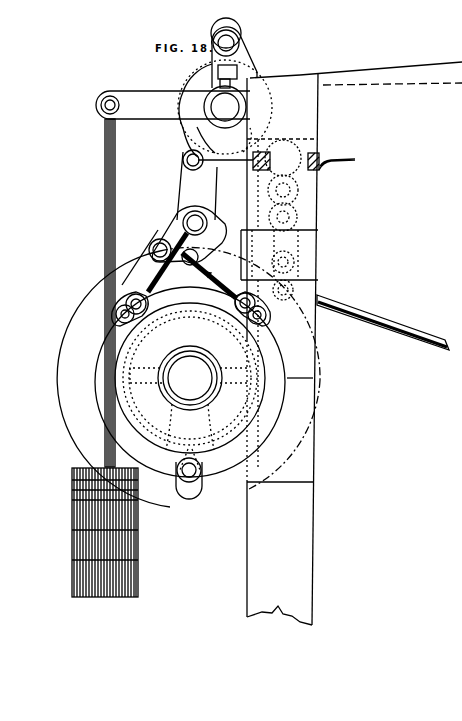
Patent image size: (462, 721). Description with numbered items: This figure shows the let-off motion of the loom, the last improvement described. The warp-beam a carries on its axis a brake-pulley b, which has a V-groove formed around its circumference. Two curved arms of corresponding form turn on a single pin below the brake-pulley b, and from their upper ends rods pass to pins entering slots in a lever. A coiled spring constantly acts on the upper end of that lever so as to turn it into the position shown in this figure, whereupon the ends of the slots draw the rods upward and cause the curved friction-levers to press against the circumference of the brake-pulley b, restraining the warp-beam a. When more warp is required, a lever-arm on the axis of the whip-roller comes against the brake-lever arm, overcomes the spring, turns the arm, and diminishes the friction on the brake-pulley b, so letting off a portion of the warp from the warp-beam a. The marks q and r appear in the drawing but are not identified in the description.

The warp-beam a is at (191, 377).
The brake-pulley b is at (188, 420).
The lever arm q is at (210, 167).
The bar r is at (383, 322).